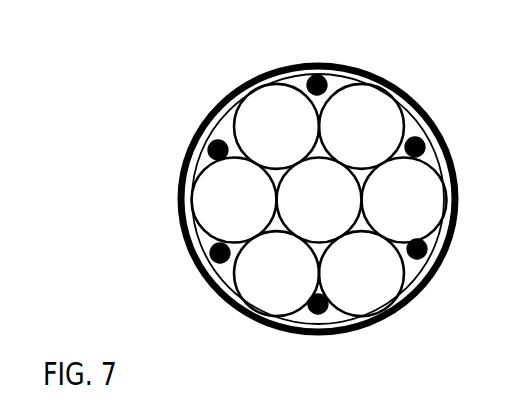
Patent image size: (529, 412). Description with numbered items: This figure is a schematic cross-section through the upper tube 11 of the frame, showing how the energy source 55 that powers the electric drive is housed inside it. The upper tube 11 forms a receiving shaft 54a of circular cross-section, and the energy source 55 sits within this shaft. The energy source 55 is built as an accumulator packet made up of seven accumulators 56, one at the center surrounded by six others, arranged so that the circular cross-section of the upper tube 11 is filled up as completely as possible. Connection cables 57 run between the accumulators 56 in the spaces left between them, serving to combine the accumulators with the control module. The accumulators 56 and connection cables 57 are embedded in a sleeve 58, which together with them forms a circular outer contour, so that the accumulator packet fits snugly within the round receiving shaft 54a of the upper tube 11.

The upper tube 11 is at (446, 130).
The receiving shaft 54a is at (427, 115).
The energy source 55 is at (267, 112).
The accumulators 56 is at (332, 212).
The connection cables 57 is at (318, 75).
The sleeve 58 is at (190, 161).